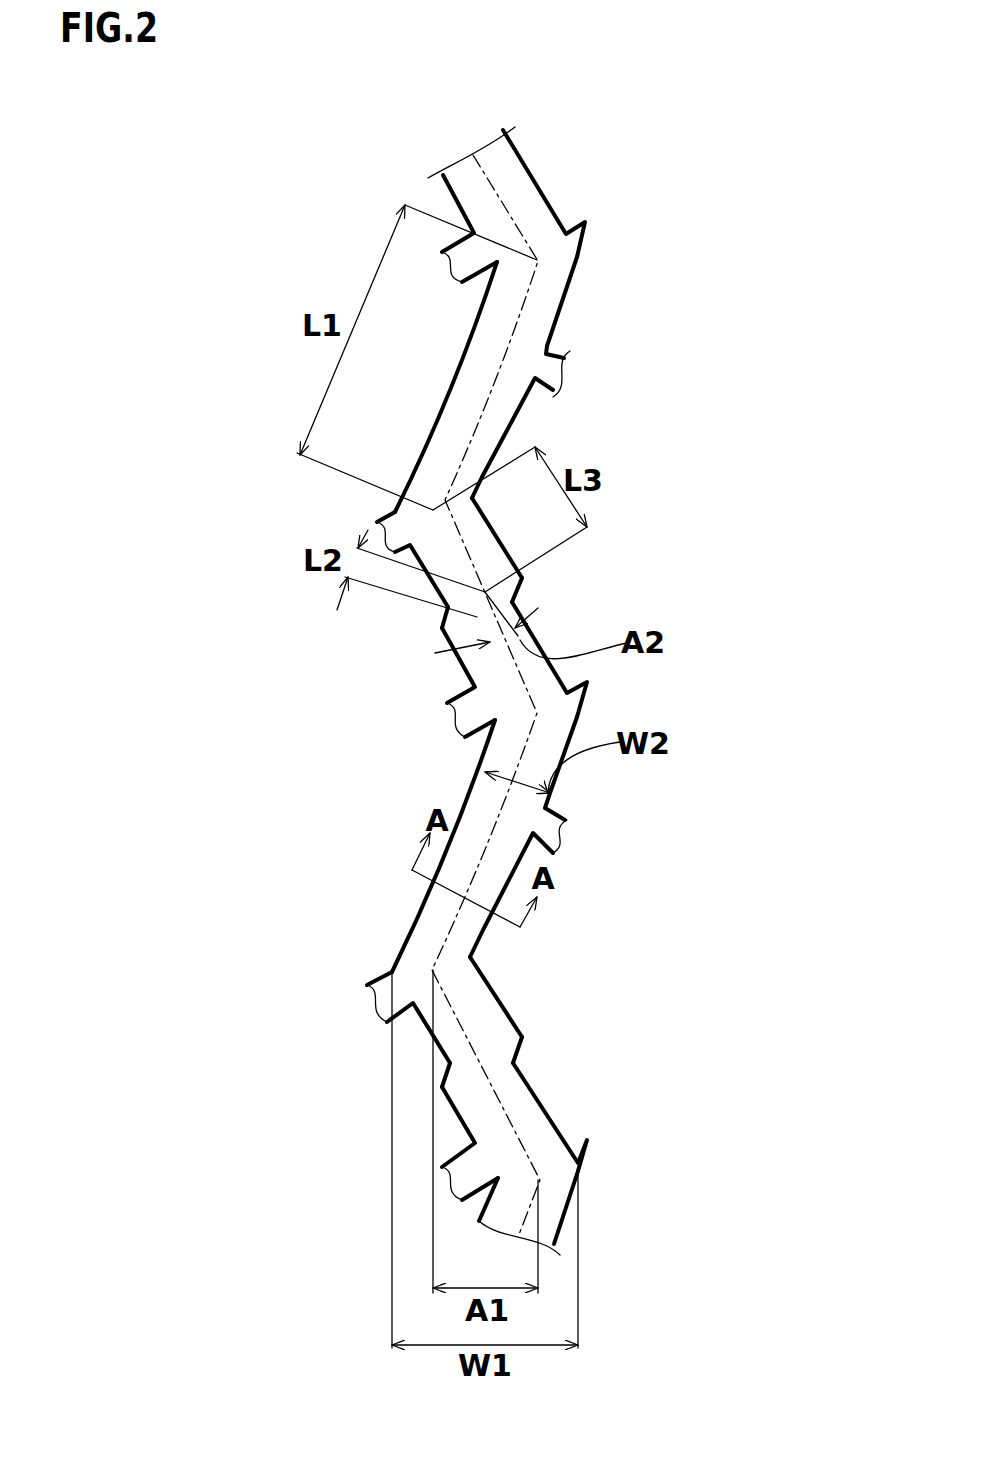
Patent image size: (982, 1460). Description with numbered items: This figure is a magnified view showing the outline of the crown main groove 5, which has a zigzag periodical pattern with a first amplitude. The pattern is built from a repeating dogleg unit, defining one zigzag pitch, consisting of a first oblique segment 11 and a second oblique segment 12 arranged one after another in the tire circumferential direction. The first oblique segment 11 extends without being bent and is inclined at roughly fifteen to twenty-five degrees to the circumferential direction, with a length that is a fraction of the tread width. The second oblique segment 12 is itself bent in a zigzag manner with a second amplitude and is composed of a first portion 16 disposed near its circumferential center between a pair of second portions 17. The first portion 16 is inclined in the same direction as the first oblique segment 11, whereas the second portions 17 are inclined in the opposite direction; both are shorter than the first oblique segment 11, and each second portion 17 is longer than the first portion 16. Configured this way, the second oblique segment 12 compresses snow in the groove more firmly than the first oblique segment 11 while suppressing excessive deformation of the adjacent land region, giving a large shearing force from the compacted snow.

The crown main groove 5 is at (472, 659).
The first oblique segment 11 is at (520, 360).
The second oblique segment 12 is at (472, 833).
The first portion 16 is at (512, 593).
The second portion 17 is at (443, 558).